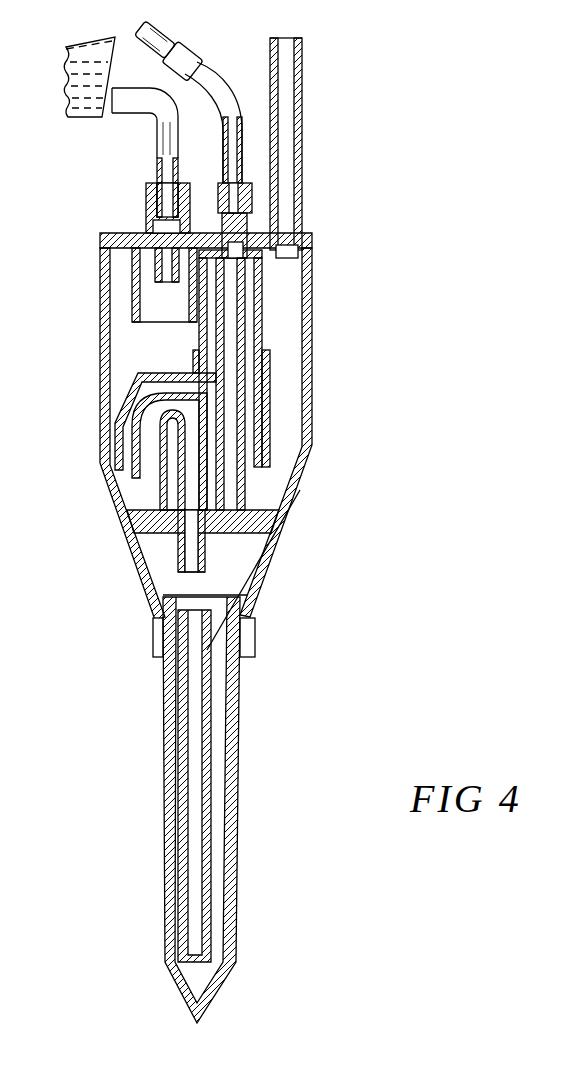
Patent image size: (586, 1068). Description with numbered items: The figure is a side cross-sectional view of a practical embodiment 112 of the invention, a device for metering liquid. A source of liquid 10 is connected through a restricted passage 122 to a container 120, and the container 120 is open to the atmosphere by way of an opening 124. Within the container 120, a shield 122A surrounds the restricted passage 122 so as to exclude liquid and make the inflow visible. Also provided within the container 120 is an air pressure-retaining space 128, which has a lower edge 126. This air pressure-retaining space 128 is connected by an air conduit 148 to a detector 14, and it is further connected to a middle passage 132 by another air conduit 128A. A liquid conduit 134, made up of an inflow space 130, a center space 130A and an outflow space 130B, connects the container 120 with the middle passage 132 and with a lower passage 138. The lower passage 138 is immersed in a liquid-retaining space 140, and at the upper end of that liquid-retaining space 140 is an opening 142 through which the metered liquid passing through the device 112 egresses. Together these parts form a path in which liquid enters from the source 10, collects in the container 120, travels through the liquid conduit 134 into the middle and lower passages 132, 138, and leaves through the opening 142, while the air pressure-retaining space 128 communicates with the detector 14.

The source of liquid 10 is at (104, 43).
The detector 14 is at (155, 40).
The air conduit 148 is at (216, 80).
The opening 124 is at (288, 37).
The practical embodiment of the invention 112 is at (333, 233).
The container 120 is at (127, 350).
The restricted passage 122 is at (160, 266).
The shield 122A is at (140, 296).
The air pressure-retaining space 128 is at (256, 430).
The lower edge 126 is at (250, 472).
The inflow space 130 is at (122, 446).
The center space 130A is at (187, 486).
The liquid conduit 134 is at (143, 468).
The air conduit 128A is at (237, 487).
The outflow space 130B is at (180, 556).
The middle passage 132 is at (247, 560).
The opening 142 is at (252, 643).
The lower passage 138 is at (193, 717).
The liquid-retaining space 140 is at (218, 767).